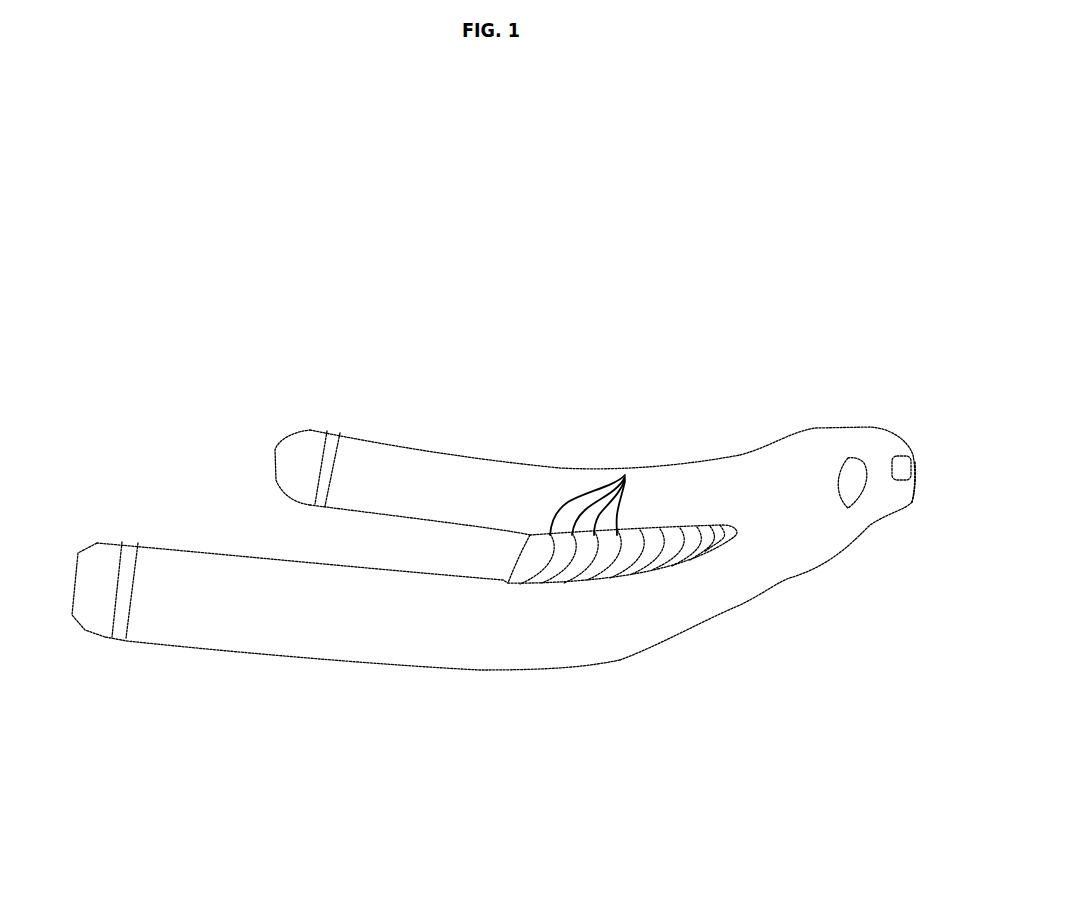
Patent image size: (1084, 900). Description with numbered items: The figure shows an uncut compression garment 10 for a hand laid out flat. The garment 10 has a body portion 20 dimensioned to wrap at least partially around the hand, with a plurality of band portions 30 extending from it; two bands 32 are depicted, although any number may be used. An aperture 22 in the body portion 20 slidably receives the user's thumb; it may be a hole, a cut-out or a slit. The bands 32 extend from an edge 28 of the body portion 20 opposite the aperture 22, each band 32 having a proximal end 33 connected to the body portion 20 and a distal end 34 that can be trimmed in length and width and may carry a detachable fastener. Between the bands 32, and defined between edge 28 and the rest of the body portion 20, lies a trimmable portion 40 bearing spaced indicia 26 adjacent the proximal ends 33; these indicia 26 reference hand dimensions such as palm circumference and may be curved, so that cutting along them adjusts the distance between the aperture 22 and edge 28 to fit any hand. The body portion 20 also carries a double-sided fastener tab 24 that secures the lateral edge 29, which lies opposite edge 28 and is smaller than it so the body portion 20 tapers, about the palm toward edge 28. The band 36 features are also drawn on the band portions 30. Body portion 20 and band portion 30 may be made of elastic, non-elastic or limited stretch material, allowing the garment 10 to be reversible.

The garment 10 is at (316, 291).
The body portion 20 is at (793, 570).
The aperture 22 is at (848, 478).
The fastener tab 24 is at (905, 468).
The indicia 26 is at (625, 475).
The edge 28 is at (506, 576).
The lateral edge 29 is at (915, 472).
The band portion 30 is at (405, 456).
The band 32 is at (462, 490).
The proximal end 33 is at (516, 500).
The distal end 34 is at (293, 468).
The strap band 36 is at (328, 456).
The trimmable portion 40 is at (660, 522).